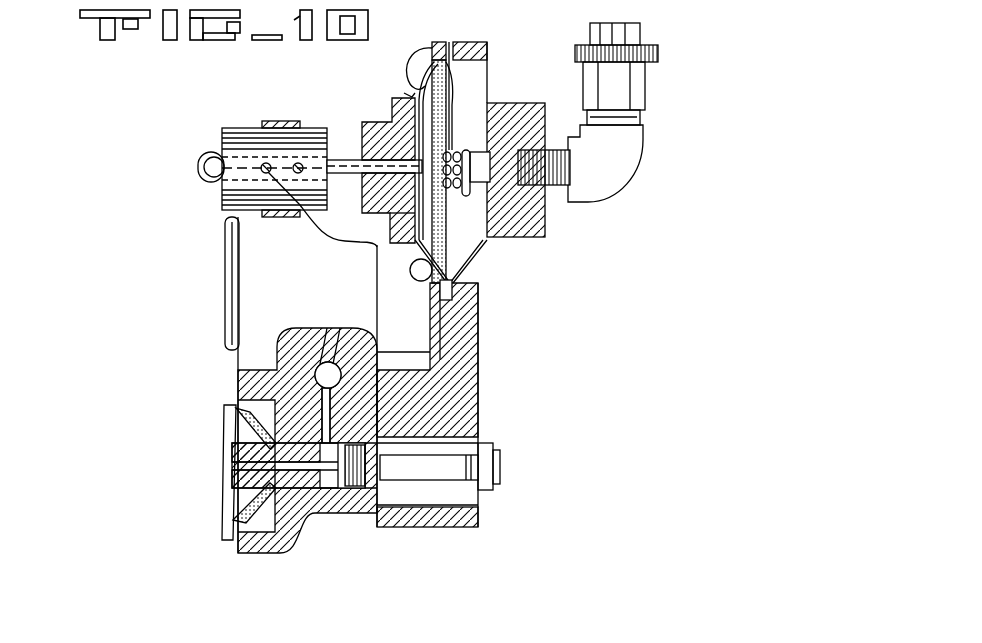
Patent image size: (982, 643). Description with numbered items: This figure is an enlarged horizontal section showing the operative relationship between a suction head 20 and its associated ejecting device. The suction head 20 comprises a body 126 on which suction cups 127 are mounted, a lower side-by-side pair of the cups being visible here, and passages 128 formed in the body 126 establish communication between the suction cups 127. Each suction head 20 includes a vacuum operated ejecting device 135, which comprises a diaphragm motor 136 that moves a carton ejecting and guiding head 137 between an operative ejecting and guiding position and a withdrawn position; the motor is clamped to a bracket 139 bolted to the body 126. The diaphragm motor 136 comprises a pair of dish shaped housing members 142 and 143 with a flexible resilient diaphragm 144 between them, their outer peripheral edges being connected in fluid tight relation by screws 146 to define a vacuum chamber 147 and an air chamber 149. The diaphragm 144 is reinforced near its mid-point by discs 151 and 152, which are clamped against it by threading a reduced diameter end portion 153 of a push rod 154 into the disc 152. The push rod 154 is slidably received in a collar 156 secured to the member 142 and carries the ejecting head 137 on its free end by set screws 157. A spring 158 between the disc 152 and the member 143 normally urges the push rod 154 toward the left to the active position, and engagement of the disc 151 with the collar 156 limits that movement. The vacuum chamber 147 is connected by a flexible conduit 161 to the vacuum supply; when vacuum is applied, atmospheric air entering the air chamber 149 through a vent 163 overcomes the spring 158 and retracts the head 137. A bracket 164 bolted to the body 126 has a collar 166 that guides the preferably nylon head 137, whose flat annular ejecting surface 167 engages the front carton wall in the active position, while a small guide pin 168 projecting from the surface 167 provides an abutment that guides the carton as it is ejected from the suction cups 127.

The suction head 20 is at (236, 378).
The body 126 is at (308, 304).
The suction cups 127 is at (229, 281).
The passages 128 is at (326, 372).
The vacuum operated ejecting device 135 is at (226, 124).
The diaphragm motor 136 is at (440, 110).
The carton ejecting and guiding head 137 is at (221, 136).
The bracket 139 is at (472, 322).
The dish shaped housing member 142 is at (410, 75).
The dish shaped housing member 143 is at (430, 98).
The flexible resilient diaphragm 144 is at (435, 138).
The screws 146 is at (425, 46).
The vacuum chamber 147 is at (470, 247).
The air chamber 149 is at (417, 246).
The disc 151 is at (380, 124).
The disc 152 is at (450, 157).
The reduced diameter end portion 153 is at (455, 195).
The push rod 154 is at (358, 160).
The collar 156 is at (397, 238).
The set screws 157 is at (300, 172).
The spring 158 is at (540, 215).
The flexible conduit 161 is at (643, 35).
The vent 163 is at (404, 93).
The bracket 164 is at (287, 218).
The collar 166 is at (279, 120).
The flat annular ejecting surface 167 is at (225, 196).
The guide pin 168 is at (203, 172).